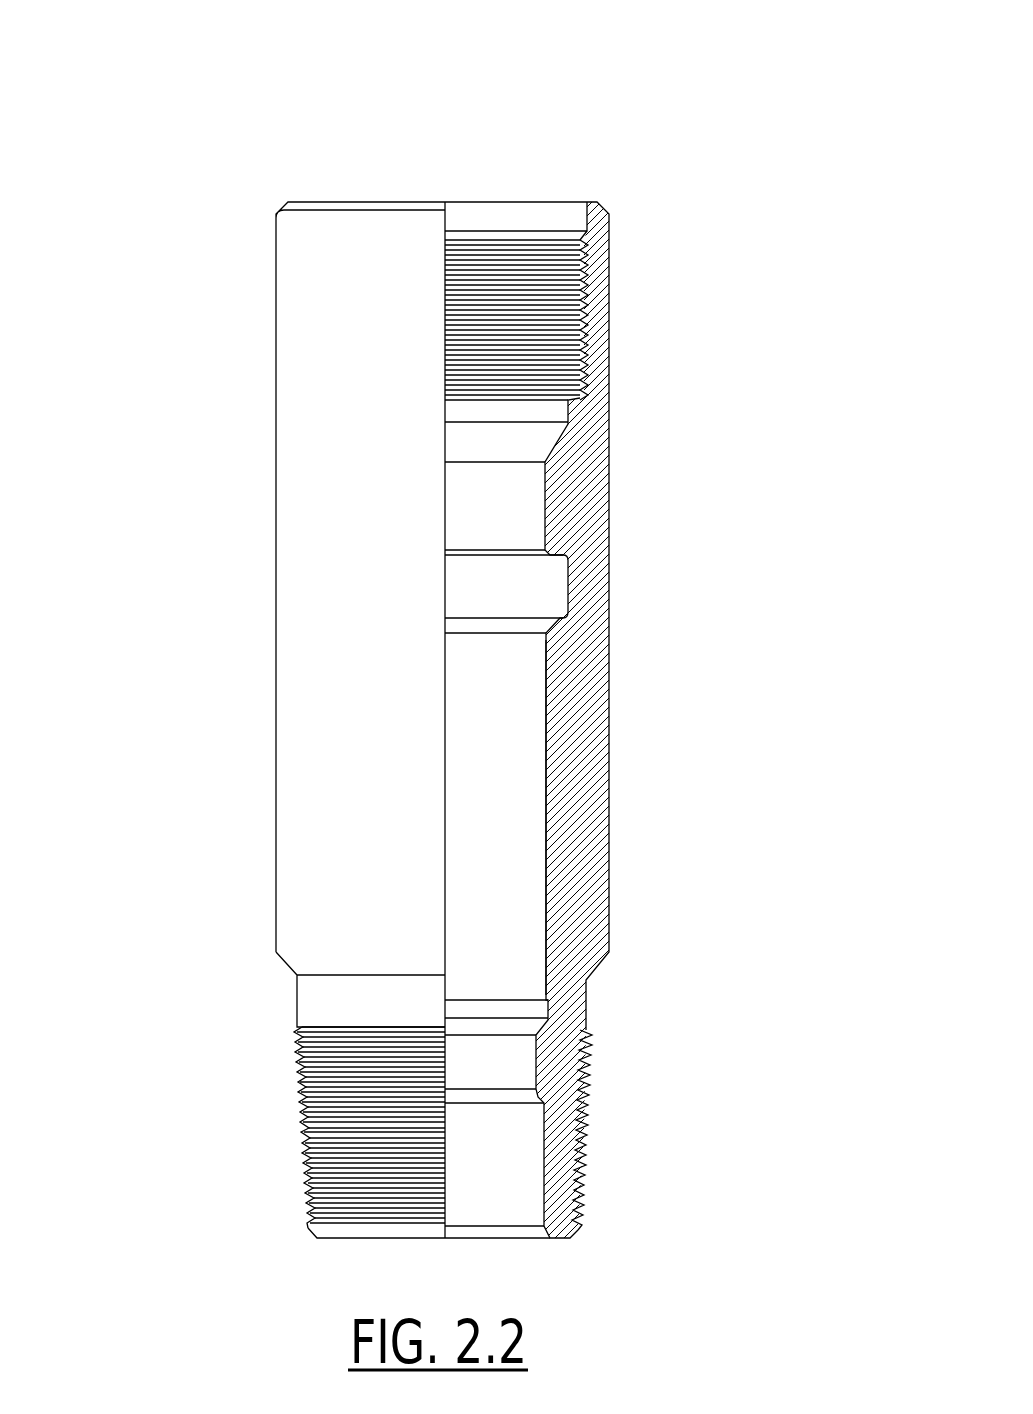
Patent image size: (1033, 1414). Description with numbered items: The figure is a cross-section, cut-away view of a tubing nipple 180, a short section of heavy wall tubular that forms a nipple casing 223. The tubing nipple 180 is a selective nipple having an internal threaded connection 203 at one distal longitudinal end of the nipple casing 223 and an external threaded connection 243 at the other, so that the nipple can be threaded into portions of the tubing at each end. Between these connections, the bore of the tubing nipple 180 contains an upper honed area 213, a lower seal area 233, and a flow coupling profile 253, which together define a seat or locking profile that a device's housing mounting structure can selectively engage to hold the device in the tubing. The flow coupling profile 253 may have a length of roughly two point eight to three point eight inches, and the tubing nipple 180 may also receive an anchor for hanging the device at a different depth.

The tubing nipple 180 is at (196, 160).
The internal threaded connection 203 is at (527, 298).
The upper honed area 213 is at (527, 548).
The nipple casing 223 is at (525, 624).
The lower seal area 233 is at (496, 815).
The external threaded connection 243 is at (308, 1075).
The flow coupling profile 253 is at (507, 1070).